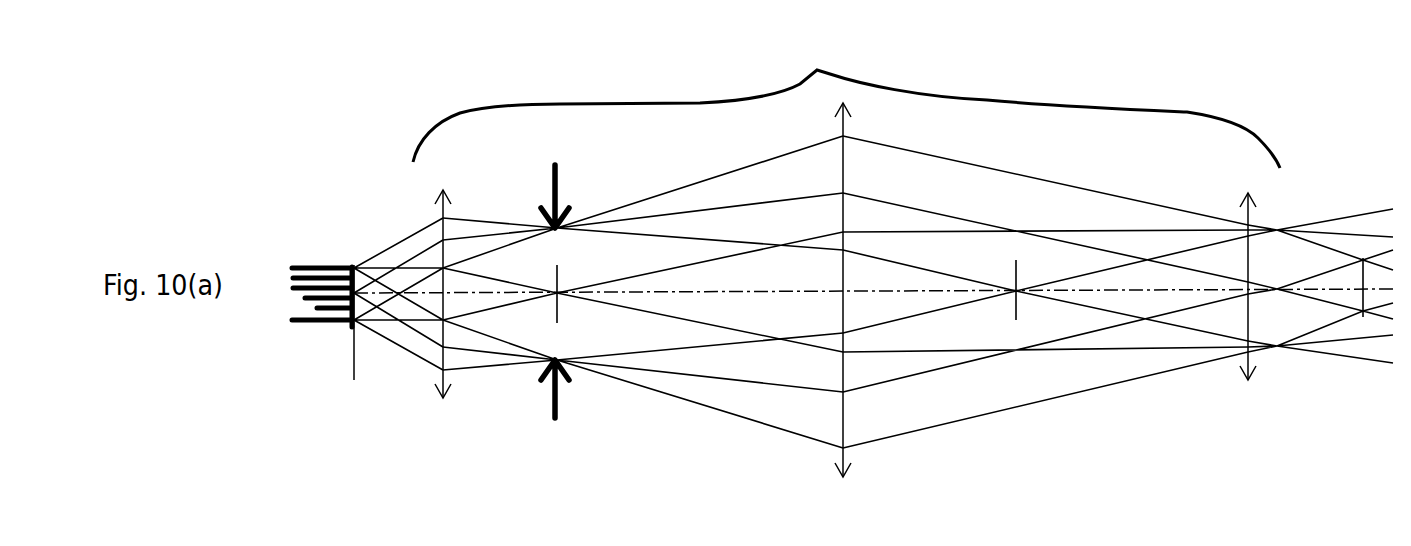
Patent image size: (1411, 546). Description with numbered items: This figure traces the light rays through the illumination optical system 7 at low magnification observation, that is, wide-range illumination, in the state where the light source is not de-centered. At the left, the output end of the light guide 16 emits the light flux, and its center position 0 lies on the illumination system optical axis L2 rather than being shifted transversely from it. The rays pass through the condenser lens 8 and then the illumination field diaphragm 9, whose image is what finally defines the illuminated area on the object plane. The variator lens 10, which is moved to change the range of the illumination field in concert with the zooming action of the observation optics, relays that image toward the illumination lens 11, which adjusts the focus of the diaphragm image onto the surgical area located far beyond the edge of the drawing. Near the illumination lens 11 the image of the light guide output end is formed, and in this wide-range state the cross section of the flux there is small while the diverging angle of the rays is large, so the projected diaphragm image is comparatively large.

The illumination optical system 7 is at (846, 98).
The center position of the output end of the light guide 0 is at (354, 336).
The light guide 16 is at (315, 337).
The condenser lens 8 is at (442, 408).
The illumination field diaphragm 9 is at (557, 428).
The variator lens 10 is at (842, 487).
The illumination lens 11 is at (1238, 398).
The illumination system optical axis L2 is at (917, 292).